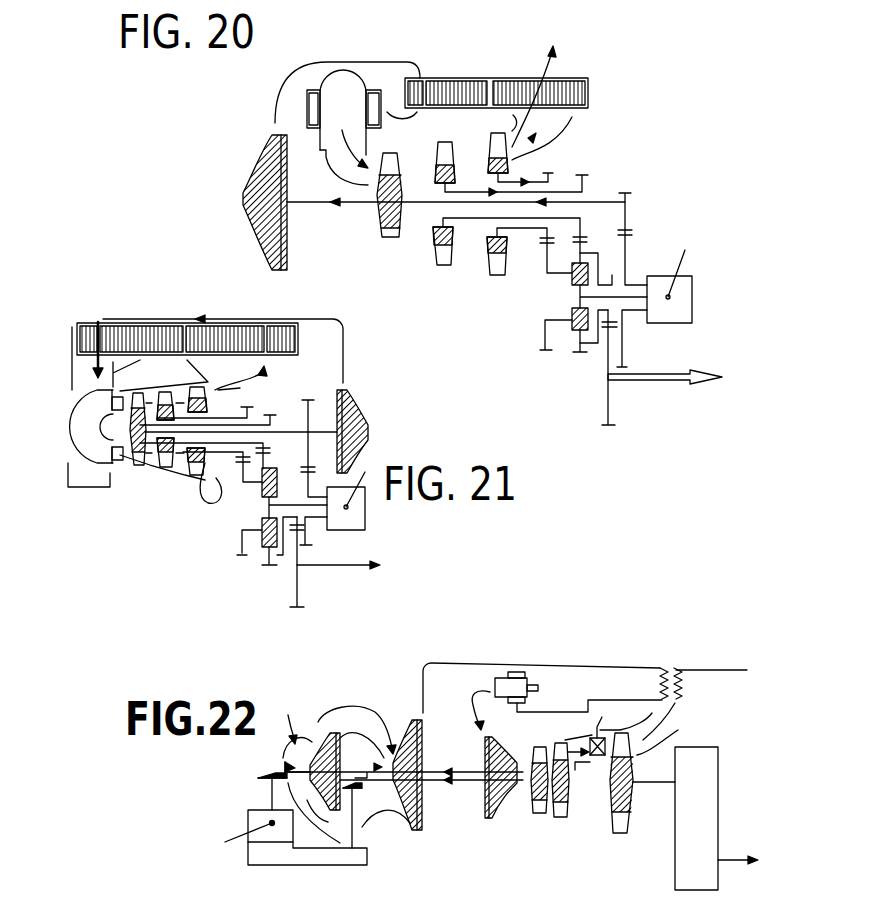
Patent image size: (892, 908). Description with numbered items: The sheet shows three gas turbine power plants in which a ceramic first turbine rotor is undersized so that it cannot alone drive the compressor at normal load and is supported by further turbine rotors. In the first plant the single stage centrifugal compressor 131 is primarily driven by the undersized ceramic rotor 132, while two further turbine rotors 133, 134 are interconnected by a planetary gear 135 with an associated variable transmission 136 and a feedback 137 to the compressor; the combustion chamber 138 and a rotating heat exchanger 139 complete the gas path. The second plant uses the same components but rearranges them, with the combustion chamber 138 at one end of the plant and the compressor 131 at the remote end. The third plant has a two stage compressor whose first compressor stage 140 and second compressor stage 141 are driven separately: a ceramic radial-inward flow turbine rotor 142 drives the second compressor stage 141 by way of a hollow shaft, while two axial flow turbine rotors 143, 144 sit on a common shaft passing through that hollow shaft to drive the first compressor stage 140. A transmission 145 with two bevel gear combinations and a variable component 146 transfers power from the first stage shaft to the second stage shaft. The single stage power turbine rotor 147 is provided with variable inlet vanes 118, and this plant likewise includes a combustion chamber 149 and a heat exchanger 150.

In FIG. 20, the single stage centrifugal compressor 131 is at (252, 173).
In FIG. 21, the single stage centrifugal compressor 131 is at (358, 412).
In FIG. 20, the undersized ceramic rotor 132 is at (377, 218).
In FIG. 21, the undersized ceramic rotor 132 is at (132, 448).
In FIG. 20, the turbine rotor 133 is at (432, 238).
In FIG. 21, the turbine rotor 133 is at (160, 467).
In FIG. 20, the turbine rotor 134 is at (488, 247).
In FIG. 21, the turbine rotor 134 is at (195, 470).
In FIG. 20, the planetary gear 135 is at (572, 328).
In FIG. 21, the planetary gear 135 is at (258, 547).
In FIG. 20, the variable transmission 136 is at (683, 307).
In FIG. 21, the variable transmission 136 is at (348, 523).
In FIG. 20, the feedback 137 is at (632, 197).
In FIG. 21, the feedback 137 is at (302, 407).
In FIG. 20, the combustion chamber 138 is at (333, 117).
In FIG. 21, the combustion chamber 138 is at (68, 412).
In FIG. 20, the rotating heat exchanger 139 is at (477, 80).
In FIG. 21, the rotating heat exchanger 139 is at (134, 328).
In FIG. 22, the first compressor stage 140 is at (323, 752).
In FIG. 22, the second compressor stage 141 is at (405, 743).
In FIG. 22, the radial-inward flow turbine rotor 142 is at (485, 802).
In FIG. 22, the axial flow turbine rotor 143 is at (536, 800).
In FIG. 22, the axial flow turbine rotor 144 is at (558, 817).
In FIG. 22, the transmission 145 is at (317, 858).
In FIG. 22, the variable component 146 is at (258, 817).
In FIG. 22, the power turbine rotor 147 is at (630, 807).
In FIG. 22, the combustion chamber 149 is at (520, 683).
In FIG. 22, the heat exchanger 150 is at (667, 675).
In FIG. 22, the variable inlet vanes 118 is at (597, 755).